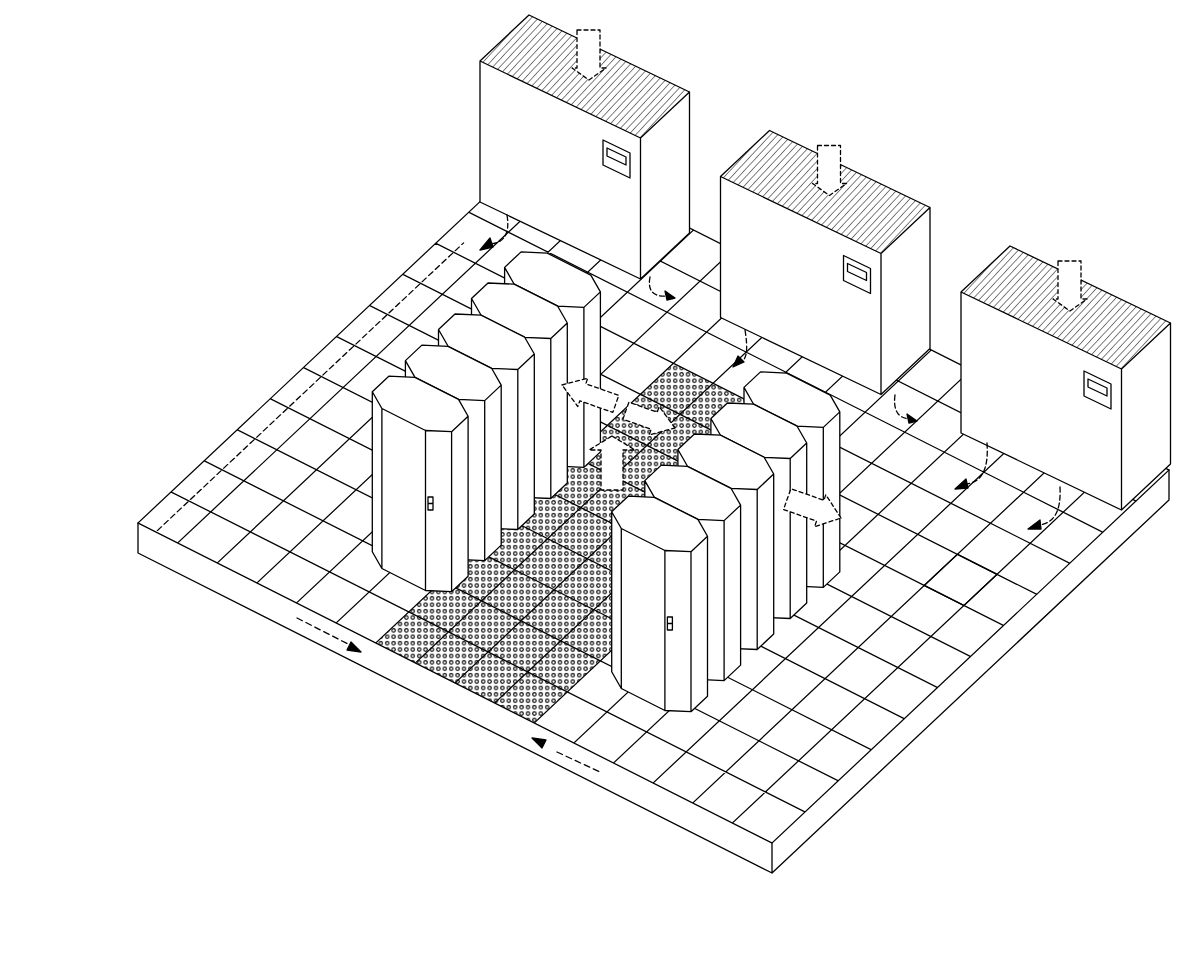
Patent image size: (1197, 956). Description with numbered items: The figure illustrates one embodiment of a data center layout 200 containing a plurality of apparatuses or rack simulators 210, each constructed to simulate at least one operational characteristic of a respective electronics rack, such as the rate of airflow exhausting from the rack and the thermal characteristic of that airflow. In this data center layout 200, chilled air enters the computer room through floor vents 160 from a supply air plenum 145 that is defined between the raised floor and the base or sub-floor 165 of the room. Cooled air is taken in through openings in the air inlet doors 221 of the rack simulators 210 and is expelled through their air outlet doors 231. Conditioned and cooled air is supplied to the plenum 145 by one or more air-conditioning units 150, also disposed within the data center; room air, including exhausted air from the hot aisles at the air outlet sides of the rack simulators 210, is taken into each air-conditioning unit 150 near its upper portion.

The data center layout 200 is at (303, 166).
The air-conditioning unit 150 is at (777, 130).
The rack simulator 210 is at (452, 378).
The air inlet door 221 is at (620, 657).
The air outlet door 231 is at (686, 625).
The supply air plenum 145 is at (653, 511).
The sub-floor 165 is at (653, 671).
The floor vent 160 is at (424, 688).